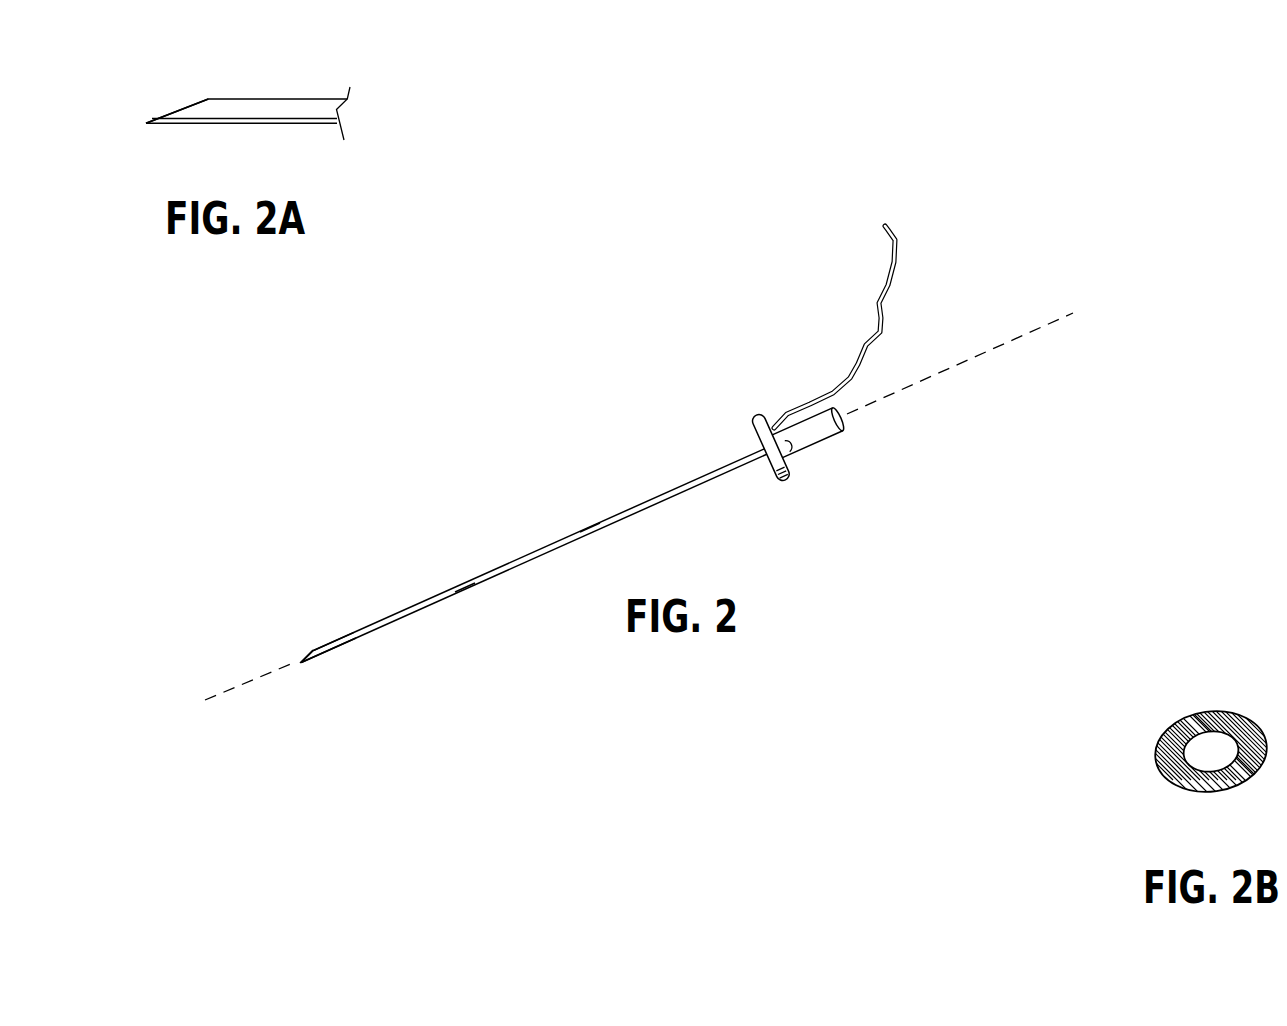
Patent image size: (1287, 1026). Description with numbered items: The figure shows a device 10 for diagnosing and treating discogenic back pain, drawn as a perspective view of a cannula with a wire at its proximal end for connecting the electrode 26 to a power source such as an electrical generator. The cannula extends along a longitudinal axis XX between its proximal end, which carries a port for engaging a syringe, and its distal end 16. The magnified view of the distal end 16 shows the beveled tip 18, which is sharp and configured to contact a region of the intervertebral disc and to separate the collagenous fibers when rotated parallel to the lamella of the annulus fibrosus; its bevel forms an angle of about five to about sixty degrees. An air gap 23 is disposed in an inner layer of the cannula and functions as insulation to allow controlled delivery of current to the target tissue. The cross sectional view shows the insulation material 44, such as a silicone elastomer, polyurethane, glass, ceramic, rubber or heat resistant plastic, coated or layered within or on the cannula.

In FIG. 2, the device 10 is at (538, 364).
In FIG. 2A, the distal end 16 is at (244, 99).
In FIG. 2A, the beveled tip 18 is at (159, 124).
In FIG. 2A, the air gap 23 is at (335, 124).
In FIG. 2, the electrode 26 is at (881, 283).
In FIG. 2B, the insulation material 44 is at (1155, 748).
In FIG. 2, the longitudinal axis XX is at (977, 357).